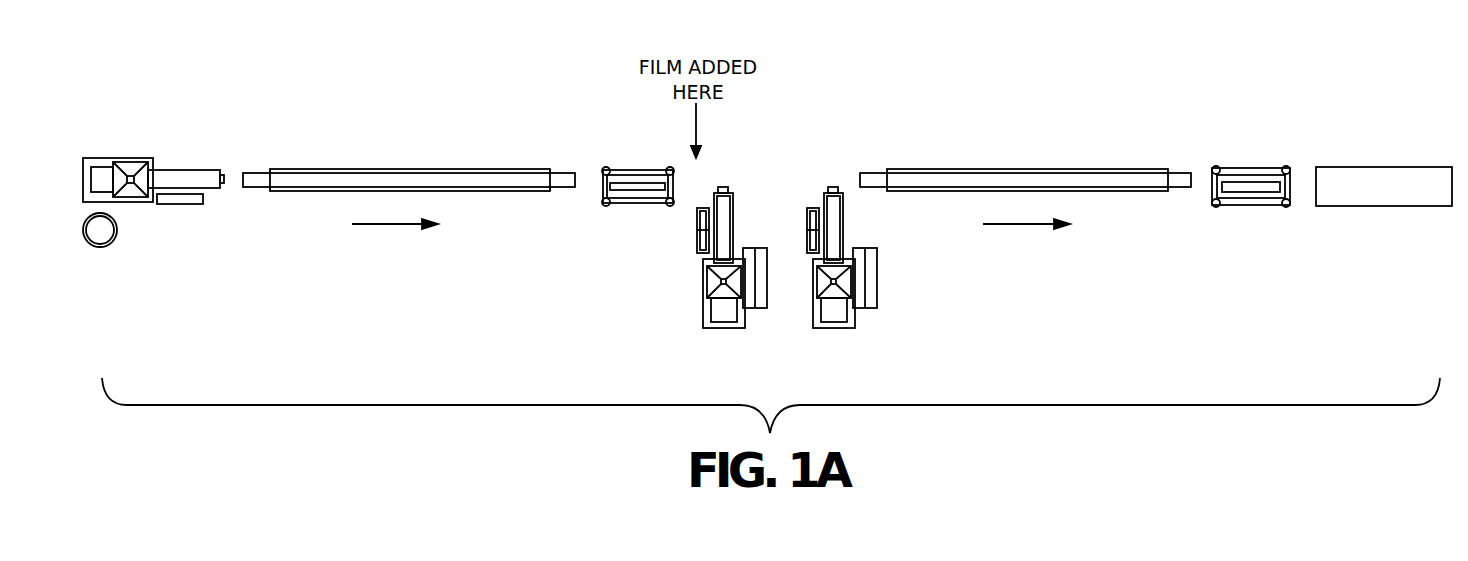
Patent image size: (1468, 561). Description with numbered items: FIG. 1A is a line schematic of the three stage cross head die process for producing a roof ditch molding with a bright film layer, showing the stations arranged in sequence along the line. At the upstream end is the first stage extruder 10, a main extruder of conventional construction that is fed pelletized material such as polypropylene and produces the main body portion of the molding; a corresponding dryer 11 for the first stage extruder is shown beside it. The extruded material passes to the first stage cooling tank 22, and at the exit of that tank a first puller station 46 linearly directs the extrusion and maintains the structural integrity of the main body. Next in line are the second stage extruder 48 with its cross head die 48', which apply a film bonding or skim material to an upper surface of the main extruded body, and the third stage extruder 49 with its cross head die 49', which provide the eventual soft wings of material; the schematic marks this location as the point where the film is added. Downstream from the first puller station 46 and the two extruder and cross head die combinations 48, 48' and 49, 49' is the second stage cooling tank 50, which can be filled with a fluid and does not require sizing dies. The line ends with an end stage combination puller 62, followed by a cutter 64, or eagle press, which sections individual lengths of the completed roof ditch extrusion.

The first stage extruder 10 is at (123, 158).
The dryer 11 is at (117, 232).
The first stage cooling tank 22 is at (460, 168).
The first puller station 46 is at (642, 170).
The second stage extruder 48 is at (693, 257).
The cross head die 48' is at (660, 233).
The third stage extruder 49 is at (807, 275).
The cross head die 49' is at (793, 198).
The second stage cooling tank 50 is at (1030, 168).
The end stage combination puller 62 is at (1252, 168).
The cutter 64 is at (1348, 177).